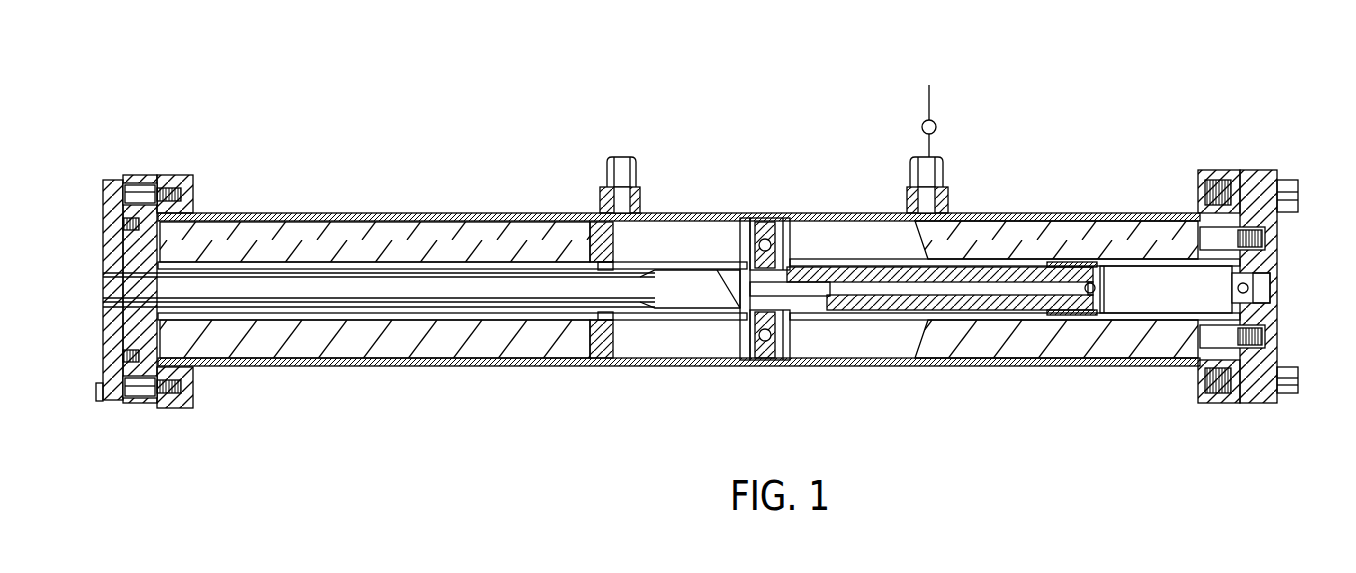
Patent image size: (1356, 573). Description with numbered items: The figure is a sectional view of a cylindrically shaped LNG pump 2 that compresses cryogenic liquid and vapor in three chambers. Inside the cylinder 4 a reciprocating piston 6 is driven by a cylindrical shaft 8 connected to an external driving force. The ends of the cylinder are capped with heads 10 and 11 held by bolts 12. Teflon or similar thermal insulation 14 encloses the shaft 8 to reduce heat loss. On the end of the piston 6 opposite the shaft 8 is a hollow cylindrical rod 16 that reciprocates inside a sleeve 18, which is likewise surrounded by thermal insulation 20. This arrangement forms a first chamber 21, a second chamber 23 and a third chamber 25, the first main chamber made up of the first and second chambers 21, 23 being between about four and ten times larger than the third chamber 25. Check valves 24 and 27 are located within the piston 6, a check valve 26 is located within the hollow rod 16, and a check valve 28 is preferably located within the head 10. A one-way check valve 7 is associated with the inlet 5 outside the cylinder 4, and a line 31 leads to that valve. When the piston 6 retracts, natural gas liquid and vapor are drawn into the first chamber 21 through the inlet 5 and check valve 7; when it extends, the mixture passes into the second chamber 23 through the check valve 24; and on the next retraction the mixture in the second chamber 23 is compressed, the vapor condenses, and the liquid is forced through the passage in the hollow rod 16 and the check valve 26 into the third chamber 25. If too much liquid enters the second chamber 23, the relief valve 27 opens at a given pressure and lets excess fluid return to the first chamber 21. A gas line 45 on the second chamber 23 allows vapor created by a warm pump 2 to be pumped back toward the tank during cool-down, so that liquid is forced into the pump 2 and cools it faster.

The pump 2 is at (497, 180).
The cylinder 4 is at (612, 366).
The inlet 5 is at (950, 188).
The piston 6 is at (728, 213).
The one-way check valve 7 is at (938, 127).
The shaft 8 is at (390, 262).
The head 10 is at (1308, 237).
The head 11 is at (104, 235).
The bolts 12 is at (137, 385).
The thermal insulation 14 is at (288, 235).
The hollow cylindrical rod 16 is at (858, 366).
The sleeve 18 is at (1113, 366).
The thermal insulation 20 is at (1025, 225).
The first chamber 21 is at (866, 259).
The second chamber 23 is at (699, 349).
The check valve 24 is at (760, 366).
The third chamber 25 is at (1194, 304).
The check valve 26 is at (1068, 366).
The relief valve 27 is at (766, 215).
The check valve 28 is at (1240, 290).
The line 31 is at (930, 96).
The gas line 45 is at (606, 170).